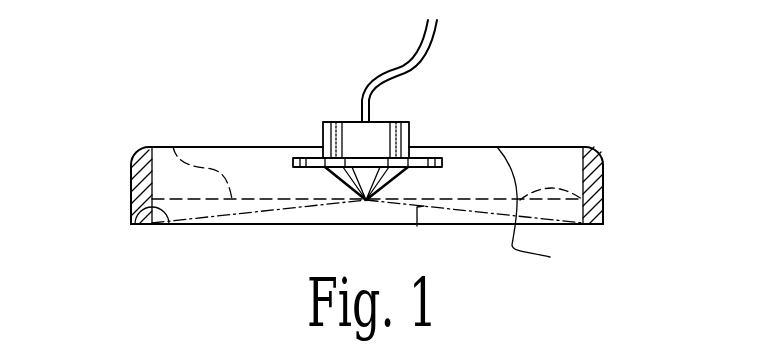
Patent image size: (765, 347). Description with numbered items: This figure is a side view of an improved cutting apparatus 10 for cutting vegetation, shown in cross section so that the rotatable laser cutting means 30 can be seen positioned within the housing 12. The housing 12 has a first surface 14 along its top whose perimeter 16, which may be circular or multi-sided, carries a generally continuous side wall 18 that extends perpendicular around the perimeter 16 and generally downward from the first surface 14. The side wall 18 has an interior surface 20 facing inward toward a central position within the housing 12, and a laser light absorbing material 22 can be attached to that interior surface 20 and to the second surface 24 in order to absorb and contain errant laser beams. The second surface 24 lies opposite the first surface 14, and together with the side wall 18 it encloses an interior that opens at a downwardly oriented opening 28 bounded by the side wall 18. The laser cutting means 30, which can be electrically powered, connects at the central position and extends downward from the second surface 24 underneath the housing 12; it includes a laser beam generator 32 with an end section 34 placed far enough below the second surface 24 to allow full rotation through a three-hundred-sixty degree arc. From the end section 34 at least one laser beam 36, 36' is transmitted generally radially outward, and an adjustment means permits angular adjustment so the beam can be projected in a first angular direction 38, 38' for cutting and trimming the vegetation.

The cutting apparatus 10 is at (110, 140).
The housing 12 is at (538, 157).
The first surface 14 is at (283, 147).
The perimeter 16 is at (588, 147).
The side wall 18 is at (603, 180).
The interior surface 20 is at (132, 225).
The laser light absorbing material 22 is at (168, 224).
The second surface 24 is at (540, 210).
The opening 28 is at (245, 225).
The laser cutting means 30 is at (338, 88).
The laser beam generator 32 is at (381, 129).
The end section 34 is at (366, 201).
The laser beam 36 is at (195, 139).
The laser beam 36' is at (596, 203).
The first angular direction 38 is at (259, 242).
The first angular direction 38' is at (474, 231).